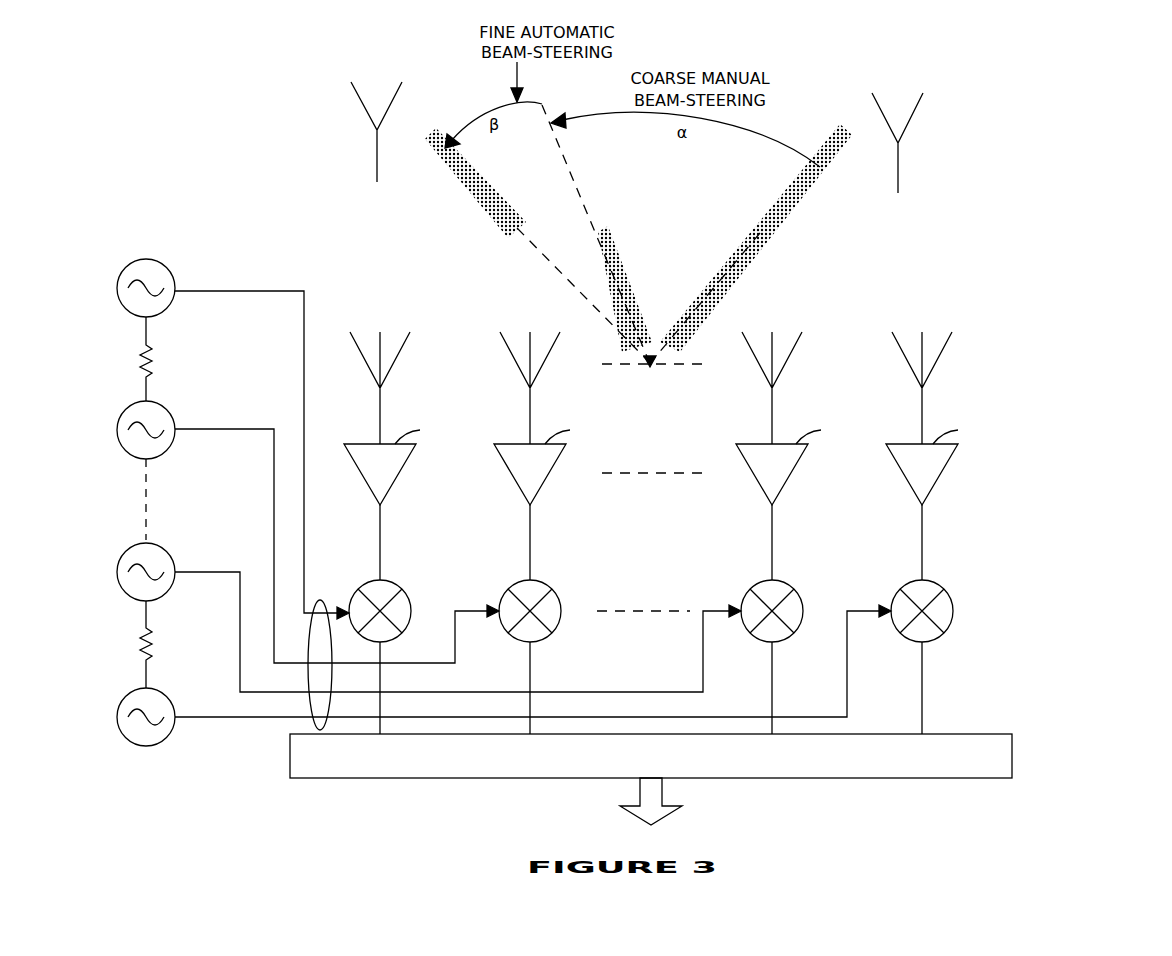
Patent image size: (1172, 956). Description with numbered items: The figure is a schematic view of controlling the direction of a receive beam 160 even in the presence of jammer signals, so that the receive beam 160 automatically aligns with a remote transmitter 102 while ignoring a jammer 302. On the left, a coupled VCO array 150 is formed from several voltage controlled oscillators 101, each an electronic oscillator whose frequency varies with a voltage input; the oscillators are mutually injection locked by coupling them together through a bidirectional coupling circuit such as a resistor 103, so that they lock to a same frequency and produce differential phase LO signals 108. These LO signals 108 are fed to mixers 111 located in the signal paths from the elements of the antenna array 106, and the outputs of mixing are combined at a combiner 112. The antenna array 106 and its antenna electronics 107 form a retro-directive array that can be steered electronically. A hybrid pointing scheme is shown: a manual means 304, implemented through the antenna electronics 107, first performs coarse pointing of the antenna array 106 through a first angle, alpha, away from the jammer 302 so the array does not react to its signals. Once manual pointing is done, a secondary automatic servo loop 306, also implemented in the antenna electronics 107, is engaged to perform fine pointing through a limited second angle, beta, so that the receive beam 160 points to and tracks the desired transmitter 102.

The voltage controlled oscillator 101 is at (128, 268).
The transmitter 102 is at (377, 111).
The resistor 103 is at (152, 356).
The antenna array 106 is at (945, 348).
The antenna electronics 107 is at (995, 658).
The LO signals 108 is at (296, 703).
The mixer 111 is at (398, 585).
The combiner 112 is at (651, 779).
The coupled VCO array 150 is at (145, 491).
The receive beam 160 is at (612, 250).
The jammer 302 is at (899, 128).
The manual means 304 is at (1103, 520).
The secondary automatic servo loop 306 is at (1103, 597).